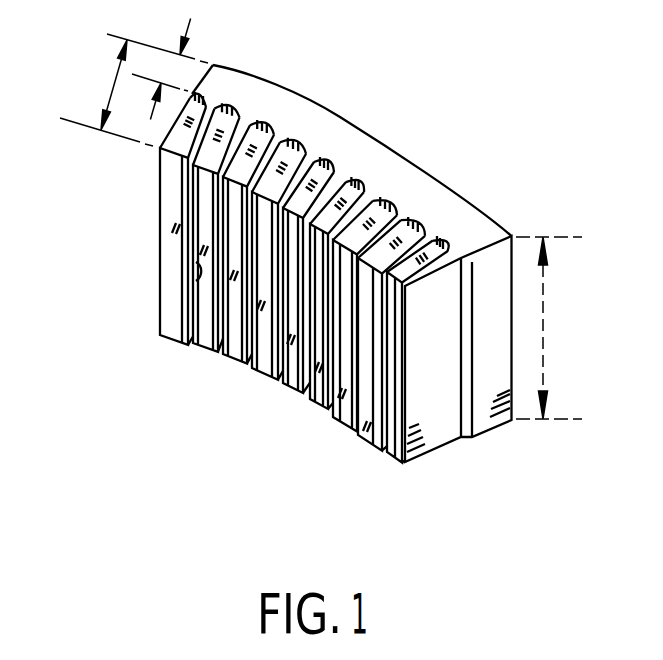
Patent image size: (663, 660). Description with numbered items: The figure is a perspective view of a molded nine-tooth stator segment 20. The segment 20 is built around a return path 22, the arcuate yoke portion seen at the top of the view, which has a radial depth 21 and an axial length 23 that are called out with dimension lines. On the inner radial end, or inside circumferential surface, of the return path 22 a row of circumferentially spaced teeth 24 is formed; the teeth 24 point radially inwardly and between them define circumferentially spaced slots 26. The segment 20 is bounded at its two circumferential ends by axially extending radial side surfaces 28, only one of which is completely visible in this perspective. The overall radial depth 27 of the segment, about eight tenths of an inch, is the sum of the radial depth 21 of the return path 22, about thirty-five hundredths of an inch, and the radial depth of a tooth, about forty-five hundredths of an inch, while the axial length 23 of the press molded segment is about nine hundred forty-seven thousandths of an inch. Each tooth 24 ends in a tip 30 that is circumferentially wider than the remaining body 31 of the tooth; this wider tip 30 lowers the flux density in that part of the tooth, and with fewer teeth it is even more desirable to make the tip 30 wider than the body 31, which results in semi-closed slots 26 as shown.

The segment 20 is at (327, 271).
The radial depth of the return path 21 is at (188, 22).
The return path 22 is at (430, 103).
The axial length 23 is at (544, 327).
The teeth 24 is at (215, 340).
The slots 26 is at (365, 418).
The overall radial depth 27 is at (113, 83).
The radial side surfaces 28 is at (493, 421).
The tips 30 is at (160, 223).
The body 31 is at (197, 280).